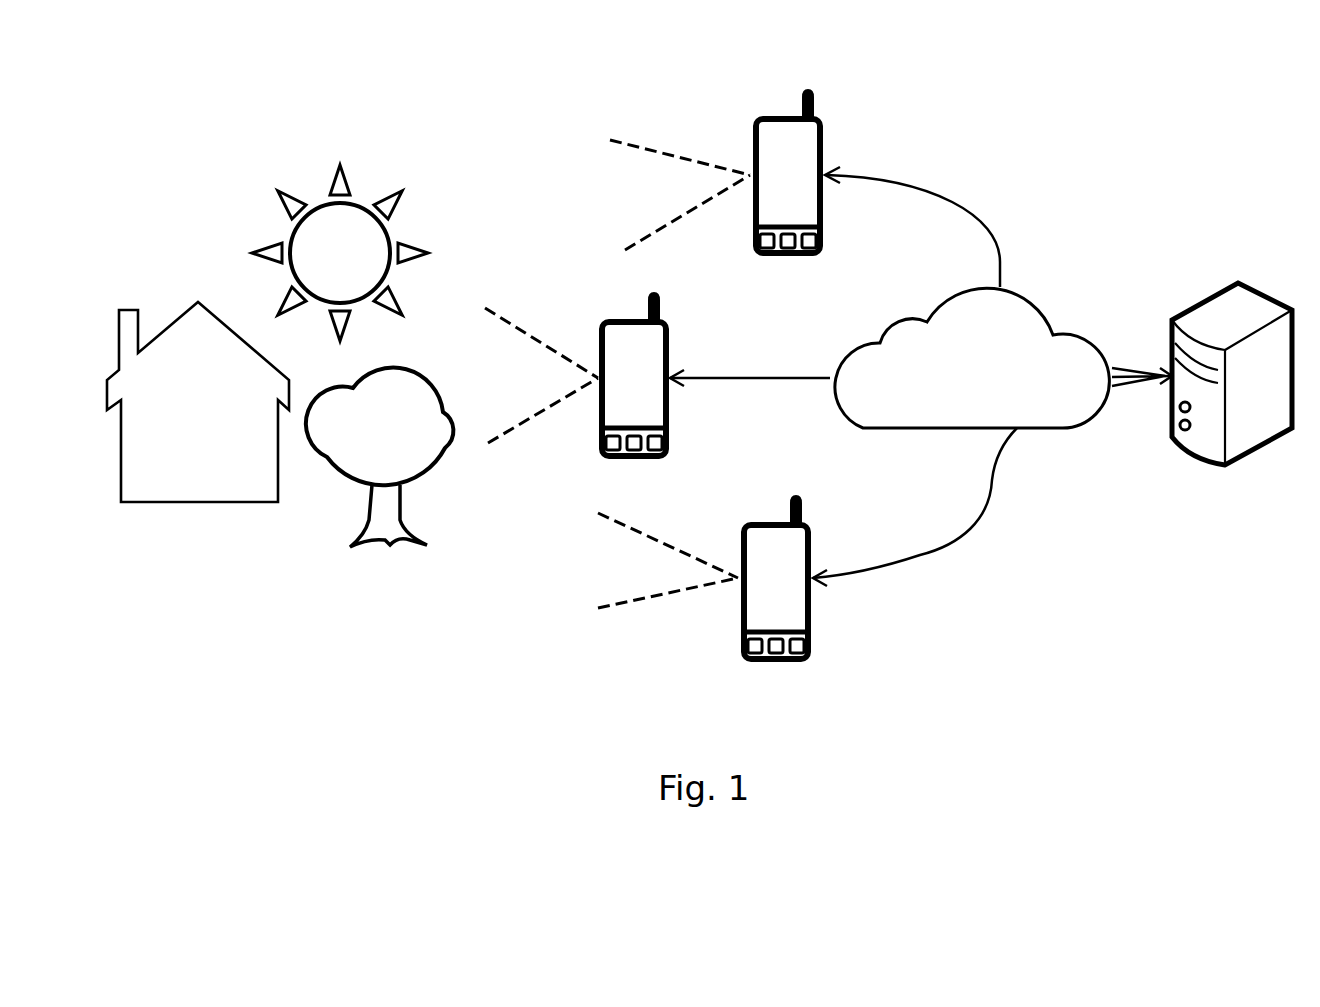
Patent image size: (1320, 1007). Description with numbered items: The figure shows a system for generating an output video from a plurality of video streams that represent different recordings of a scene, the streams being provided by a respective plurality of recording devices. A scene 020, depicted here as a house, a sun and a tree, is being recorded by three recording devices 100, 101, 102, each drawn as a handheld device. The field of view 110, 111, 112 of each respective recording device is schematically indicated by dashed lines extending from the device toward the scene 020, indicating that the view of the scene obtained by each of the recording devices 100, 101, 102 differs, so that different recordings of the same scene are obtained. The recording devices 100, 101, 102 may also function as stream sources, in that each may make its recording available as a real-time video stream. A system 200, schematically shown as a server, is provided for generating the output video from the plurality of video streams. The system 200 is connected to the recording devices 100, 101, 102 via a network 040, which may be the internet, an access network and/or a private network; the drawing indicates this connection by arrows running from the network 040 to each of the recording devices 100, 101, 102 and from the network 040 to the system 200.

The scene 020 is at (198, 568).
The recording device 100 is at (795, 258).
The recording device 101 is at (642, 460).
The recording device 102 is at (790, 663).
The field of view 110 is at (673, 222).
The field of view 111 is at (530, 417).
The field of view 112 is at (652, 605).
The network 040 is at (1050, 428).
The system 200 is at (1222, 467).